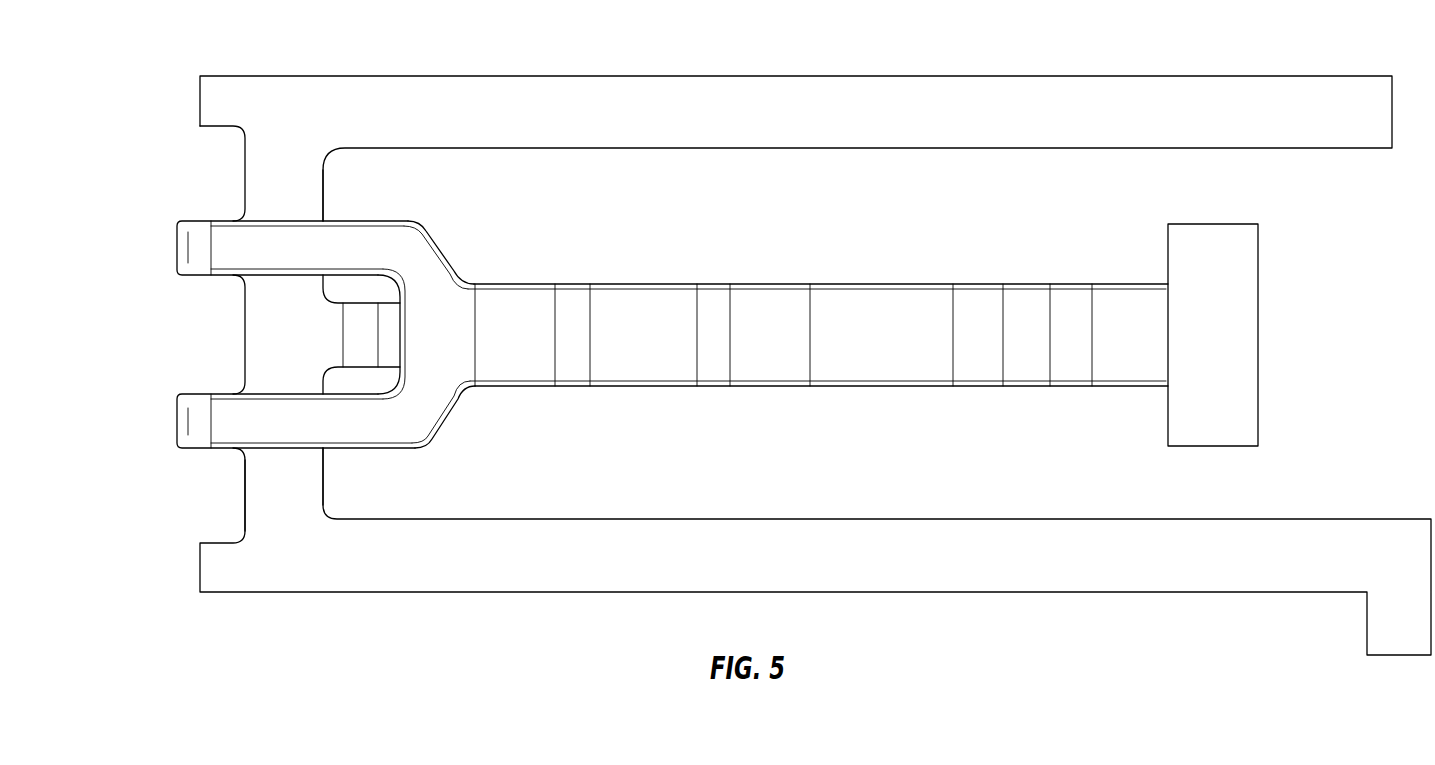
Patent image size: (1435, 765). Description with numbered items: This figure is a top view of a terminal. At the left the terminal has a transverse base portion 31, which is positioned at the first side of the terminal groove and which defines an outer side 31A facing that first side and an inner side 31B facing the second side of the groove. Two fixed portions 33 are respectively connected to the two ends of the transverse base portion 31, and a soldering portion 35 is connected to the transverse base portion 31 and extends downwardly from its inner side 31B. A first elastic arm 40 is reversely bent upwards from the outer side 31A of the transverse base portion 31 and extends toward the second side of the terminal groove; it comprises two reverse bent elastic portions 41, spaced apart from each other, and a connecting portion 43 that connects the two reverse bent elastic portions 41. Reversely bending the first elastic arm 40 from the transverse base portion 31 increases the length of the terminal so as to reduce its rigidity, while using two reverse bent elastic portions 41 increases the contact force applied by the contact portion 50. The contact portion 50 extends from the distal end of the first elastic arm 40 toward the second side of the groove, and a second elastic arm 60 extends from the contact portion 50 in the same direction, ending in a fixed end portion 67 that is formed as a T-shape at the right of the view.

The transverse base portion 31 is at (777, 332).
The outer side 31A is at (243, 505).
The inner side 31B is at (286, 337).
The fixed portion 33 is at (793, 92).
The soldering portion 35 is at (388, 342).
The first elastic arm 40 is at (718, 330).
The reverse bent elastic portion 41 is at (237, 247).
The connecting portion 43 is at (438, 362).
The contact portion 50 is at (818, 330).
The second elastic arm 60 is at (1054, 282).
The fixed end portion 67 is at (1243, 337).